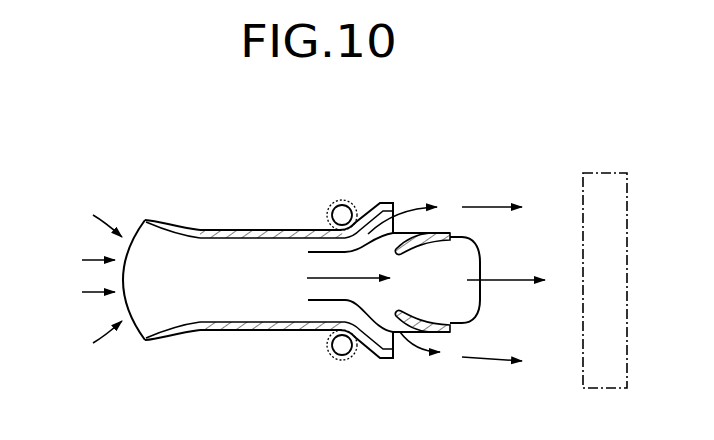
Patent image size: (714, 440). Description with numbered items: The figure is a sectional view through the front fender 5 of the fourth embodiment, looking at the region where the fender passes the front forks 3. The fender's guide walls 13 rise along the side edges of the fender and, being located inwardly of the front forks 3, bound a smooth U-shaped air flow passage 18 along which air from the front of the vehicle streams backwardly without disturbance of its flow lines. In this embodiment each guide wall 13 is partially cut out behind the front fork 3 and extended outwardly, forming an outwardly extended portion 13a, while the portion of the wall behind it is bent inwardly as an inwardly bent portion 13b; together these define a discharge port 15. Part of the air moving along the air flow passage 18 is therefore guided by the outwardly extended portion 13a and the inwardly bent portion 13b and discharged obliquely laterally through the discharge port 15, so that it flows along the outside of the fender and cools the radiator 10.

The front fork 3 is at (325, 209).
The front fender 5 is at (178, 340).
The radiator 10 is at (593, 173).
The guide wall 13 is at (270, 230).
The outwardly extended portion 13a is at (388, 202).
The inwardly bent portion 13b is at (423, 233).
The discharge port 15 is at (402, 205).
The air flow passage 18 is at (230, 247).